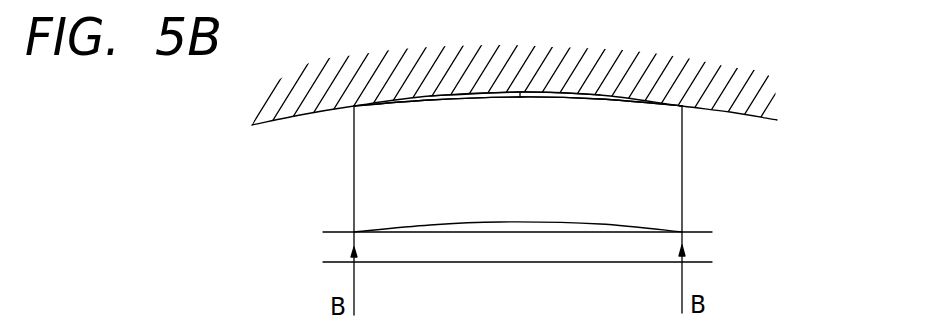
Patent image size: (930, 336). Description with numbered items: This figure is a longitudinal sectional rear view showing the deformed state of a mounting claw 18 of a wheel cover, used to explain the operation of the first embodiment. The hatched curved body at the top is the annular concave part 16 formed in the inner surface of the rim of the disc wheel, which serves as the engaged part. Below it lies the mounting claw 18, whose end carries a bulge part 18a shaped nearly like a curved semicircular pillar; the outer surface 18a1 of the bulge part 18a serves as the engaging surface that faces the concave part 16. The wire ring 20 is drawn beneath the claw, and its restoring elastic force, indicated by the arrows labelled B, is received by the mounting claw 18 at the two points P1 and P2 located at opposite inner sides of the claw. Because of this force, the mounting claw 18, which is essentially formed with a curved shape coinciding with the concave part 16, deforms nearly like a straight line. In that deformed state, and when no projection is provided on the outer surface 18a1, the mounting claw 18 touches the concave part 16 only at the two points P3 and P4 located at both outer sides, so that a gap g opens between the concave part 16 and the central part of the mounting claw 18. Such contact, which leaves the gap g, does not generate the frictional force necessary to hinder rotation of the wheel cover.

The concave part 16 is at (284, 116).
The mounting claw 18 is at (682, 175).
The bulge part 18a is at (613, 97).
The outer surface of the bulge part 18a1 is at (485, 100).
The gap g is at (522, 97).
The wire ring 20 is at (505, 250).
The point P1 is at (354, 232).
The point P2 is at (682, 230).
The point P3 is at (355, 105).
The point P4 is at (682, 106).